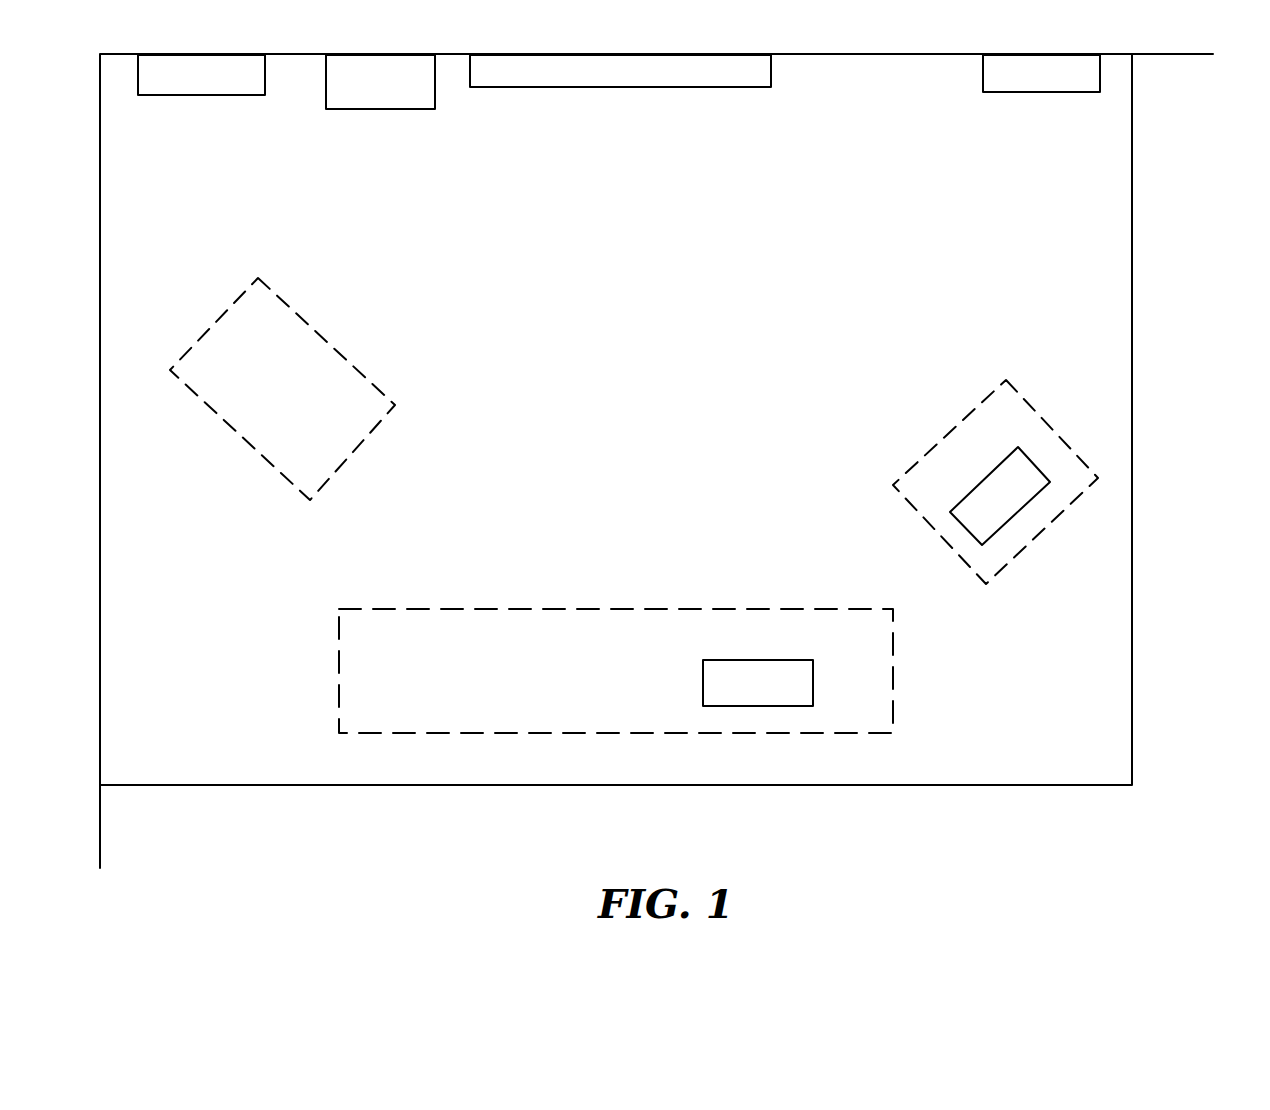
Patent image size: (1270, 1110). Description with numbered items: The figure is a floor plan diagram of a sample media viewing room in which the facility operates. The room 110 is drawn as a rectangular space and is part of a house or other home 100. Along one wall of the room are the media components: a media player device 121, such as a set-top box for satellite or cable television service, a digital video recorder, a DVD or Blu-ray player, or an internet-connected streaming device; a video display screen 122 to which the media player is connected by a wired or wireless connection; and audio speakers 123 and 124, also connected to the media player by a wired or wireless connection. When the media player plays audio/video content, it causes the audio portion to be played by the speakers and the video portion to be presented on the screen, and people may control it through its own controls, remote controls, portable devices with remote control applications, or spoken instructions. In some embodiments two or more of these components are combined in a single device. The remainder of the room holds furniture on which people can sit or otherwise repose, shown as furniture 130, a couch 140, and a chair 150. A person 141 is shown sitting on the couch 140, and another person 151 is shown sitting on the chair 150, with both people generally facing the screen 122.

The home 100 is at (1170, 830).
The room 110 is at (1115, 54).
The media player device 121 is at (413, 109).
The video display screen 122 is at (679, 87).
The audio speaker 123 is at (238, 95).
The audio speaker 124 is at (1053, 92).
The furniture 130 is at (350, 455).
The couch 140 is at (339, 686).
The person 141 is at (778, 660).
The chair 150 is at (1028, 405).
The person 151 is at (1008, 455).